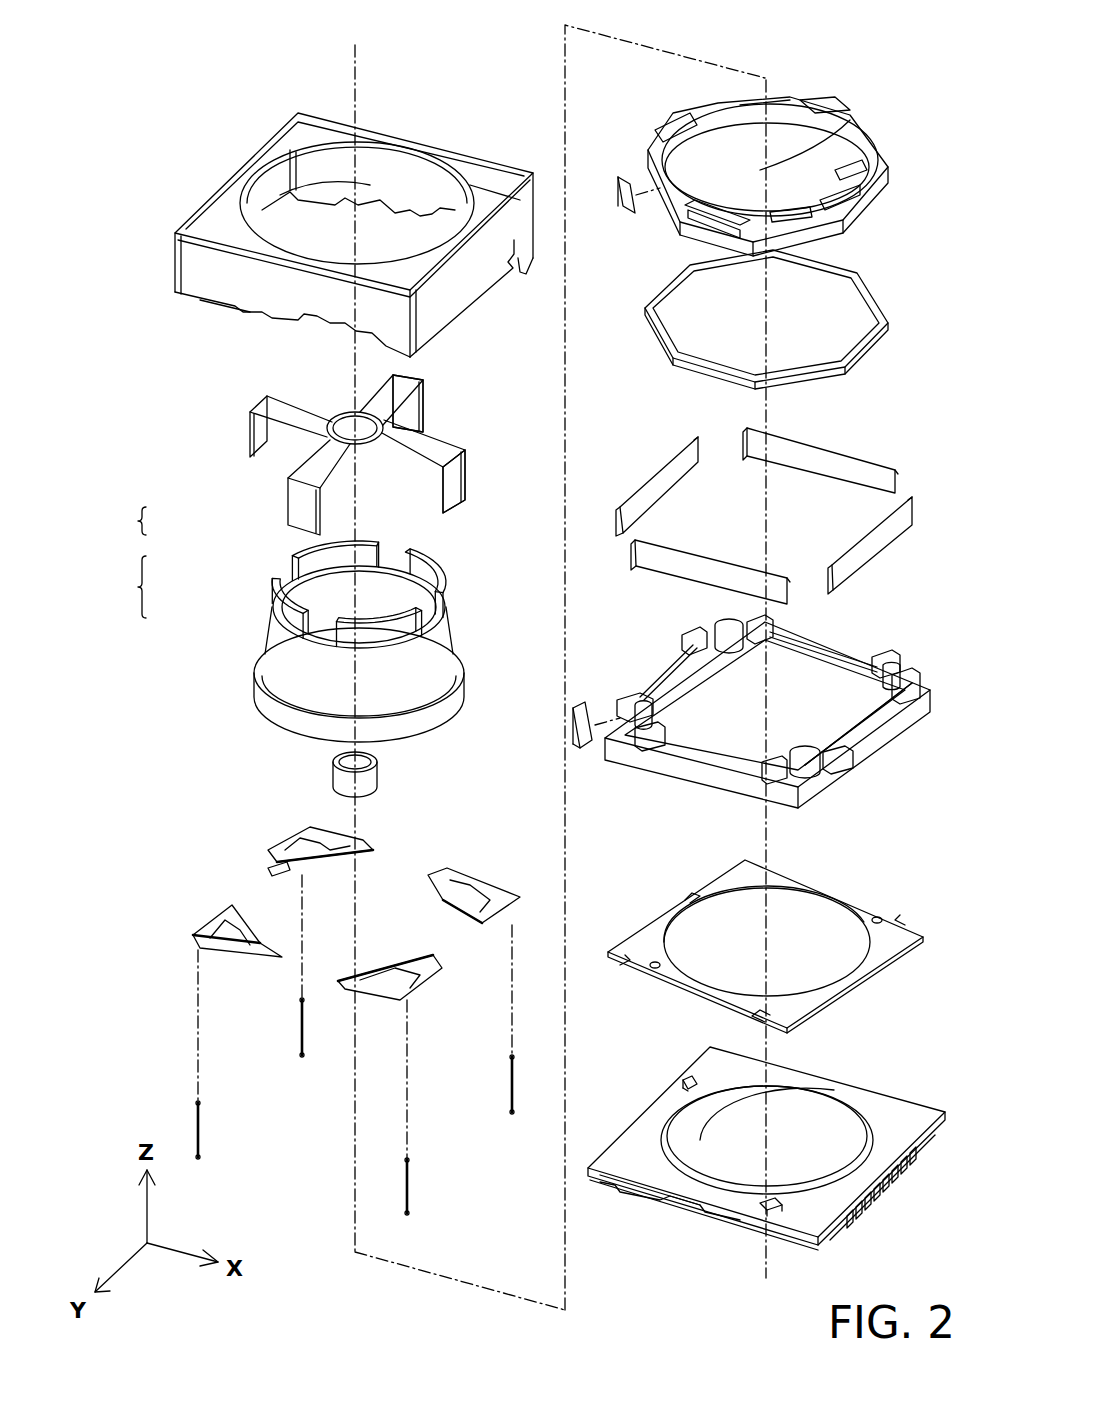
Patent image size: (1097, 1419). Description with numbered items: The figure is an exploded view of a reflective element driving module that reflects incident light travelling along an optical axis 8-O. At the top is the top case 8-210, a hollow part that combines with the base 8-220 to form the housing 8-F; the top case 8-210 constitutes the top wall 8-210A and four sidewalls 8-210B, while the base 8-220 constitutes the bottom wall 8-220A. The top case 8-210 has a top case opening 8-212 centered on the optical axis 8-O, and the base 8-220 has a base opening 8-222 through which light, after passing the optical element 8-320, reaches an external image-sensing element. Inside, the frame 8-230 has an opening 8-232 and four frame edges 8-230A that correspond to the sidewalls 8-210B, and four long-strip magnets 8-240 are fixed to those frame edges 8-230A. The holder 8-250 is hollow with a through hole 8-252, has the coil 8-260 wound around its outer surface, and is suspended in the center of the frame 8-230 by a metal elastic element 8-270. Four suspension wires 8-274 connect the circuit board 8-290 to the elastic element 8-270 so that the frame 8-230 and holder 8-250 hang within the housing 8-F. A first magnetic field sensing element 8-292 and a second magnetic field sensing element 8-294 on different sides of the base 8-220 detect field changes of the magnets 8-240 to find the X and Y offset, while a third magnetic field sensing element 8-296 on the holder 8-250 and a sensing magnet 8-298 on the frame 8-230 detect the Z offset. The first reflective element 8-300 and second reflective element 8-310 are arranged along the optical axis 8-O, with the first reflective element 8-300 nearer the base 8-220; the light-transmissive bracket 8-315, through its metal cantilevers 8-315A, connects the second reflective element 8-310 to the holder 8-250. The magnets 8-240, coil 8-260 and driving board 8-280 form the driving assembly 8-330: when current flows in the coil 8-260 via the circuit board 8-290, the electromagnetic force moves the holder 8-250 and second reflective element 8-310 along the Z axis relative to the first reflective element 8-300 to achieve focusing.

The optical axis 8-O is at (548, 662).
The housing 8-F is at (154, 526).
The driving assembly 8-330 is at (142, 586).
The top case 8-210 is at (228, 222).
The top case opening 8-212 is at (305, 210).
The top wall 8-210A is at (497, 173).
The sidewalls 8-210B is at (243, 283).
The second reflective element 8-310 is at (345, 428).
The bracket 8-315 is at (385, 393).
The cantilevers 8-315A is at (430, 440).
The first reflective element 8-300 is at (310, 672).
The optical element 8-320 is at (355, 783).
The elastic element 8-270 is at (393, 985).
The suspension wires 8-274 is at (300, 1028).
The holder 8-250 is at (830, 105).
The through hole 8-252 is at (820, 170).
The third magnetic field sensing element 8-296 is at (628, 190).
The coil 8-260 is at (872, 283).
The magnets 8-240 is at (668, 459).
The frame 8-230 is at (728, 770).
The opening 8-232 is at (715, 700).
The frame edges 8-230A is at (875, 735).
The sensing magnet 8-298 is at (583, 747).
The driving board 8-280 is at (852, 900).
The base 8-220 is at (902, 1117).
The base opening 8-222 is at (820, 1135).
The bottom wall 8-220A is at (655, 1195).
The second magnetic field sensing element 8-294 is at (683, 1080).
The first magnetic field sensing element 8-292 is at (768, 1208).
The circuit board 8-290 is at (900, 1180).